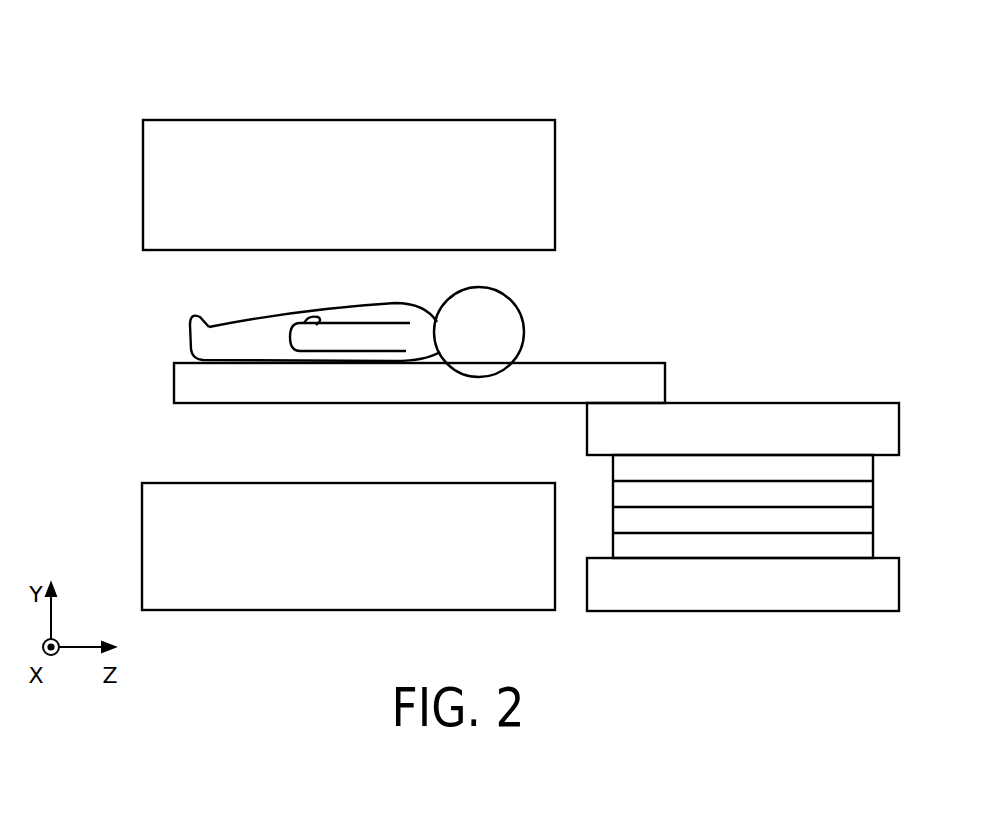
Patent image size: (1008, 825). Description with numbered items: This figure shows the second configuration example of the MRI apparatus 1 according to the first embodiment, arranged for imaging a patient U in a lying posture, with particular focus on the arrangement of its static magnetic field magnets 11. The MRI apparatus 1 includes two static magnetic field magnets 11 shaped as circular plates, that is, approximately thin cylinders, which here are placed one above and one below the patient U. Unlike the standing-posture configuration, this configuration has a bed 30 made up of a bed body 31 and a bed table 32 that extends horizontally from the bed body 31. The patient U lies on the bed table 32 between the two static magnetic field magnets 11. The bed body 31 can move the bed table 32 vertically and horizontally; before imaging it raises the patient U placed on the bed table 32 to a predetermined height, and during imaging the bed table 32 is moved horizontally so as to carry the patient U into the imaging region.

The MRI apparatus 1 is at (666, 125).
The static magnetic field magnet 11 is at (193, 120).
The bed 30 is at (623, 294).
The bed body 31 is at (727, 403).
The bed table 32 is at (623, 363).
The patient U is at (266, 318).